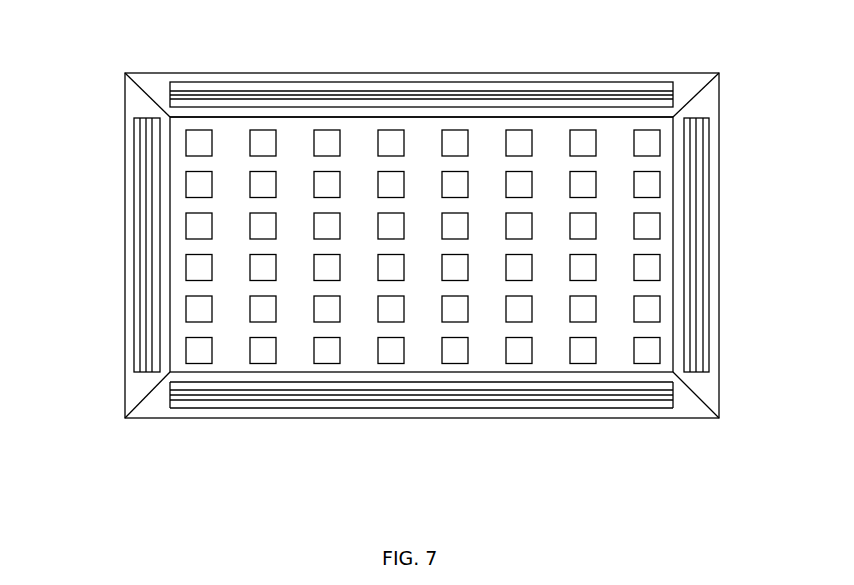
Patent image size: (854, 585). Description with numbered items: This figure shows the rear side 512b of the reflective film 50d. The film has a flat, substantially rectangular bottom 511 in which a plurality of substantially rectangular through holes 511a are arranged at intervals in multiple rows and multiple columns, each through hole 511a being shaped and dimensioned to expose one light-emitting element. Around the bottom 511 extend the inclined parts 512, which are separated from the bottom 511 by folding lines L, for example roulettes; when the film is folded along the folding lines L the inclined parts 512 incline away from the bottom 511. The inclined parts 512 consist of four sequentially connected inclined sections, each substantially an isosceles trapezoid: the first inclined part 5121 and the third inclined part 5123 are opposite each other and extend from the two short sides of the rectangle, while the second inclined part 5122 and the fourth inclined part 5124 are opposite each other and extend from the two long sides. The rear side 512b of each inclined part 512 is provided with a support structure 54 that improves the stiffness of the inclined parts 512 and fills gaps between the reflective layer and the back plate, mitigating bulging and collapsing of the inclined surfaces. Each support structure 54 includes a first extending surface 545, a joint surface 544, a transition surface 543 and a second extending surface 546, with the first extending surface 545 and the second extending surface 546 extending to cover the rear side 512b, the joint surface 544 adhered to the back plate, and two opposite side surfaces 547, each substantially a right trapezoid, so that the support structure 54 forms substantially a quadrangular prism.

The reflective film 50d is at (451, 26).
The inclined parts 512 is at (420, 255).
The first inclined part 5121 is at (750, 70).
The second inclined part 5122 is at (267, 412).
The third inclined part 5123 is at (133, 97).
The fourth inclined part 5124 is at (680, 80).
The rear side 512b is at (712, 163).
The folding lines L is at (269, 118).
The bottom 511 is at (667, 205).
The through holes 511a is at (656, 274).
The support structure 54 is at (697, 467).
The transition surface 543 is at (563, 400).
The joint surface 544 is at (510, 393).
The first extending surface 545 is at (448, 388).
The second extending surface 546 is at (619, 407).
The side surfaces 547 is at (673, 403).